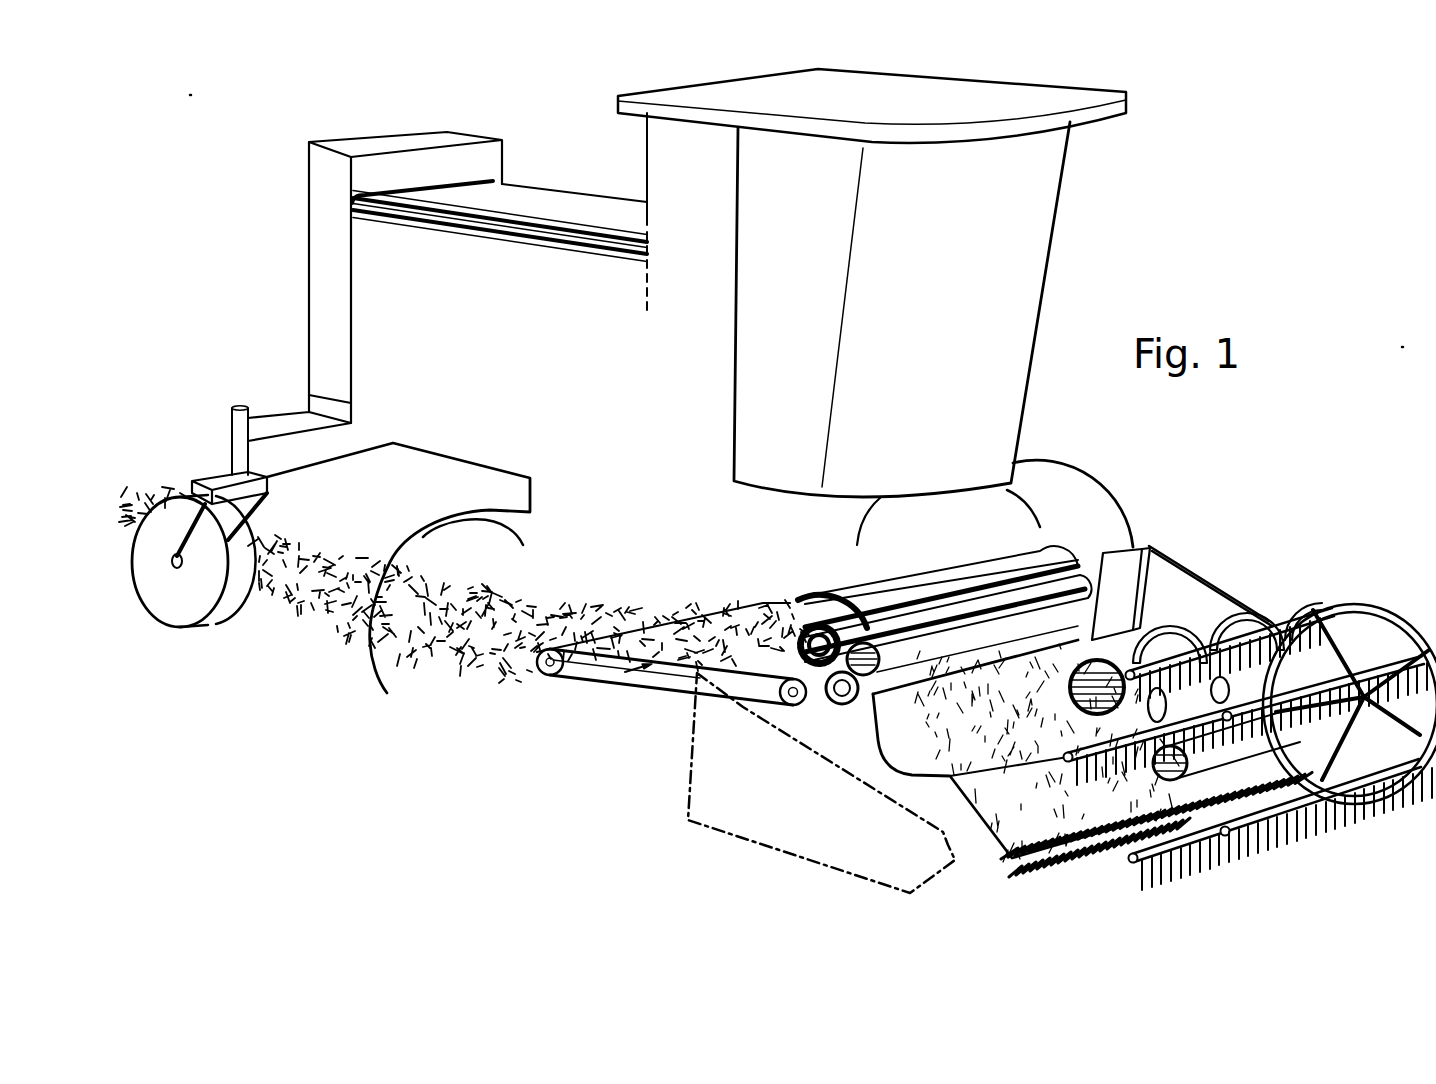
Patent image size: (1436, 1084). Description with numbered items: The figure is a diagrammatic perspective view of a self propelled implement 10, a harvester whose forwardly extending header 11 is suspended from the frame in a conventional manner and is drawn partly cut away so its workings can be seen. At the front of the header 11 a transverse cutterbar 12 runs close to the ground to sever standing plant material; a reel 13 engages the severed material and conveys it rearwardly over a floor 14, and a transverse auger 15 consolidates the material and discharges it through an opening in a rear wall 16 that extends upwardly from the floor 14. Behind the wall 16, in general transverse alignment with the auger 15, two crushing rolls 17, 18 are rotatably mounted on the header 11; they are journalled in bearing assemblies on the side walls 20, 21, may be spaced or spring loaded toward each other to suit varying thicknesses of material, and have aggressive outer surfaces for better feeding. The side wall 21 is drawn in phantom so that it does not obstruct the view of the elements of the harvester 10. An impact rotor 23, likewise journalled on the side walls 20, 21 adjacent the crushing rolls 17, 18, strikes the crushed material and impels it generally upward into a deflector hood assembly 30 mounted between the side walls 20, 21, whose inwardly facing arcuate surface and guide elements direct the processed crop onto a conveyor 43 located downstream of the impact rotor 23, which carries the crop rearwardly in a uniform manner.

The self propelled implement 10 is at (1198, 232).
The header 11 is at (1328, 538).
The cutterbar 12 is at (1090, 870).
The reel 13 is at (1355, 610).
The floor 14 is at (975, 837).
The auger 15 is at (1173, 617).
The wall 16 is at (1160, 553).
The crushing roll 17 is at (917, 645).
The crushing roll 18 is at (873, 693).
The side wall 20 is at (1199, 597).
The side wall 21 is at (713, 793).
The impact rotor 23 is at (792, 602).
The deflector hood assembly 30 is at (1020, 548).
The conveyor 43 is at (1087, 582).